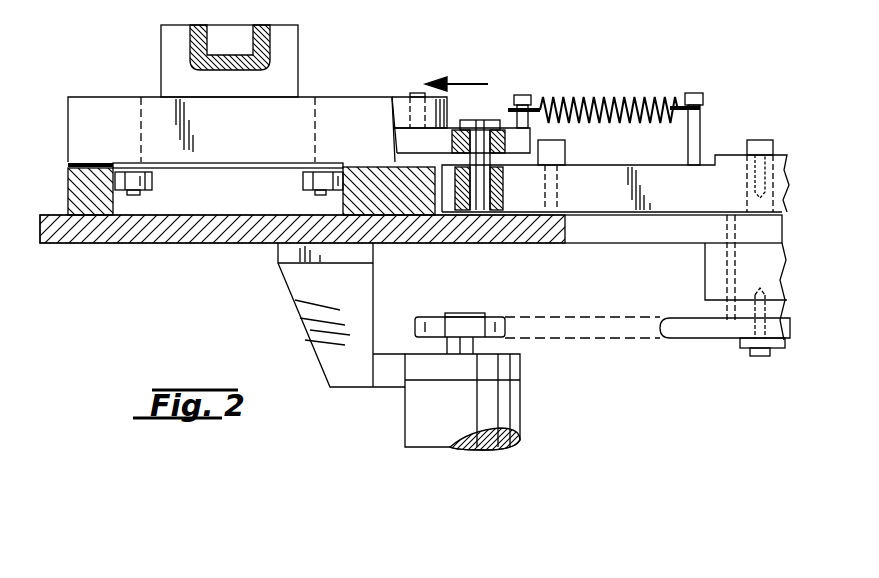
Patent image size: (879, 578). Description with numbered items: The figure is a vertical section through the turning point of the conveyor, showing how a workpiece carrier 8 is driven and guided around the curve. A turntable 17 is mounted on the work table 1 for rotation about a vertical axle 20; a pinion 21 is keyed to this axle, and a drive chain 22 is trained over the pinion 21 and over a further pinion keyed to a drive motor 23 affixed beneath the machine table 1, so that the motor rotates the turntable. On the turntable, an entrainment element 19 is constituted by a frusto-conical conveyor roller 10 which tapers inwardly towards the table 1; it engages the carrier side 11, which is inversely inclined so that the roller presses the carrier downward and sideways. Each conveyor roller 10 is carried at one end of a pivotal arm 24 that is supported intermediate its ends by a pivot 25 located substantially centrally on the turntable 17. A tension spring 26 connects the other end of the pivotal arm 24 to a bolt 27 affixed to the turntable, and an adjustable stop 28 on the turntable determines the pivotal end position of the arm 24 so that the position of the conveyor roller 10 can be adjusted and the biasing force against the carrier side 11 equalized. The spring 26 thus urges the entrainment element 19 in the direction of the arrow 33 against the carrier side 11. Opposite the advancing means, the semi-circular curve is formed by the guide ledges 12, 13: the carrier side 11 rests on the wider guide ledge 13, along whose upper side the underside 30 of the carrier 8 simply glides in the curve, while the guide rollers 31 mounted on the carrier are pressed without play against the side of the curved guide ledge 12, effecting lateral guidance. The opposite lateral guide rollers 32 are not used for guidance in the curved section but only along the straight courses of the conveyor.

The work table 1 is at (97, 245).
The carrier 8 is at (75, 114).
The conveyor roller 10 is at (405, 110).
The carrier side 11 is at (392, 96).
The guide ledge 12 is at (82, 186).
The guide ledge 13 is at (353, 200).
The turntable 17 is at (706, 176).
The entrainment element 19 is at (405, 96).
The axle 20 is at (757, 143).
The pinion 21 is at (710, 328).
The drive chain 22 is at (590, 330).
The drive motor 23 is at (494, 406).
The pivotal arm 24 is at (518, 145).
The pivot 25 is at (485, 120).
The tension spring 26 is at (578, 102).
The bolt 27 is at (696, 132).
The adjustable stop 28 is at (552, 157).
The underside 30 is at (206, 168).
The guide roller 31 is at (141, 192).
The lateral guide roller 32 is at (303, 180).
The arrow 33 is at (482, 82).